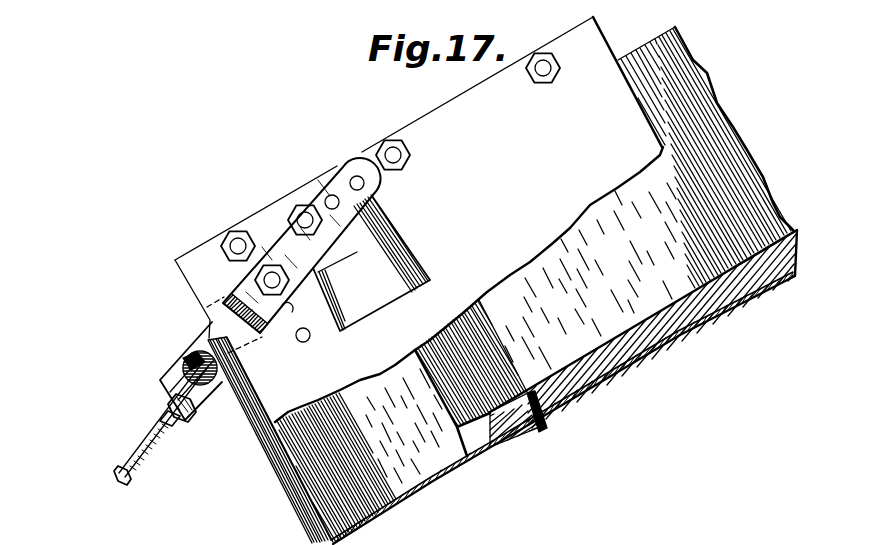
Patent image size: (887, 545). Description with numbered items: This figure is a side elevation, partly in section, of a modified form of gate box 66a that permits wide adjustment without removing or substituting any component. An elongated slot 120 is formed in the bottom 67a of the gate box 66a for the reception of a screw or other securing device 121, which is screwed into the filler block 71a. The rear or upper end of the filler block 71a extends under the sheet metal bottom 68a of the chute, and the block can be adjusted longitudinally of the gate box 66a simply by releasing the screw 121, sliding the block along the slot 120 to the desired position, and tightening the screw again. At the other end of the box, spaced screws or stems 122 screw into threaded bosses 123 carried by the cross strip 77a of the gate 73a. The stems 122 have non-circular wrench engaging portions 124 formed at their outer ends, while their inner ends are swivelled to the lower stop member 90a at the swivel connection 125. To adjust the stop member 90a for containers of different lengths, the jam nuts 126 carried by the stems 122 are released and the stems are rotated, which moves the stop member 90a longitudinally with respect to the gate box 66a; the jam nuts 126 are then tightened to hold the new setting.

The gate 73a is at (278, 208).
The sheet metal bottom of the chute 68a is at (782, 213).
The lower stop member 90a is at (185, 352).
The swivel connection 125 is at (177, 368).
The threaded bosses 123 is at (157, 399).
The screws or stems 122 is at (123, 452).
The non-circular wrench engaging portions 124 is at (122, 480).
The jam nuts 126 is at (168, 428).
The cross strip 77a is at (180, 419).
The bottom of the gate box 67a is at (455, 477).
The screw or securing device 121 is at (544, 432).
The elongated slot 120 is at (600, 397).
The filler block 71a is at (665, 330).
The gate box 66a is at (745, 303).